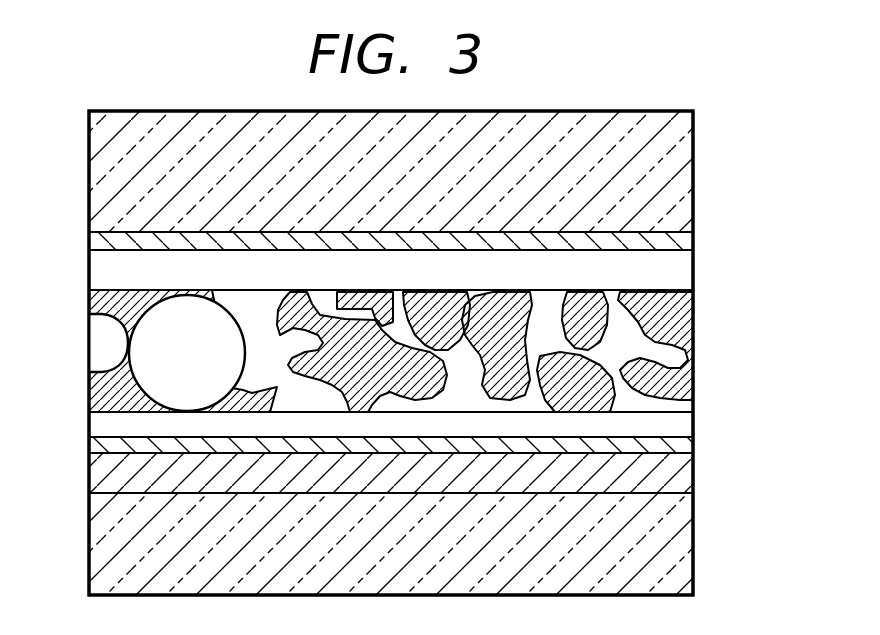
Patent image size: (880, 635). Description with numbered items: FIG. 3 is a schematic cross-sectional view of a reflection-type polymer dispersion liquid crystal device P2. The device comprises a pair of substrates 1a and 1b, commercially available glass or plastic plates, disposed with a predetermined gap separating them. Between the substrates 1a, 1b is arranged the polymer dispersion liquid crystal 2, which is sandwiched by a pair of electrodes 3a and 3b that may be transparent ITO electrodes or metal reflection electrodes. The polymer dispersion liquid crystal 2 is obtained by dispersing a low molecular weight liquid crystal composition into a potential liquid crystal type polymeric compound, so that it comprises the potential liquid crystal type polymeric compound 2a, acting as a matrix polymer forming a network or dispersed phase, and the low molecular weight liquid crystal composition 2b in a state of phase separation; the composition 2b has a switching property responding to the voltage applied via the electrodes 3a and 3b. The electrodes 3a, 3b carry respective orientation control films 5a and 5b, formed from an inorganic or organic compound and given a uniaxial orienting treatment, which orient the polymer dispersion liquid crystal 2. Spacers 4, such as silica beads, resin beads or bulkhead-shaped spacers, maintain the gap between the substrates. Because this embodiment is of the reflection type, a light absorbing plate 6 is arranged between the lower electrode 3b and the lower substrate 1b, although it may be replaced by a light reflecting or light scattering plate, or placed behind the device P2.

The liquid crystal device P2 is at (648, 97).
The substrate 1a is at (683, 181).
The substrate 1b is at (683, 550).
The electrode 3a is at (682, 243).
The electrode 3b is at (683, 447).
The orientation control film 5a is at (97, 270).
The orientation control film 5b is at (105, 427).
The polymer dispersion liquid crystal 2 is at (417, 351).
The potential liquid crystal type polymeric compound 2a is at (633, 360).
The low molecular weight liquid crystal composition 2b is at (683, 330).
The spacers 4 is at (97, 343).
The light absorbing plate 6 is at (683, 480).